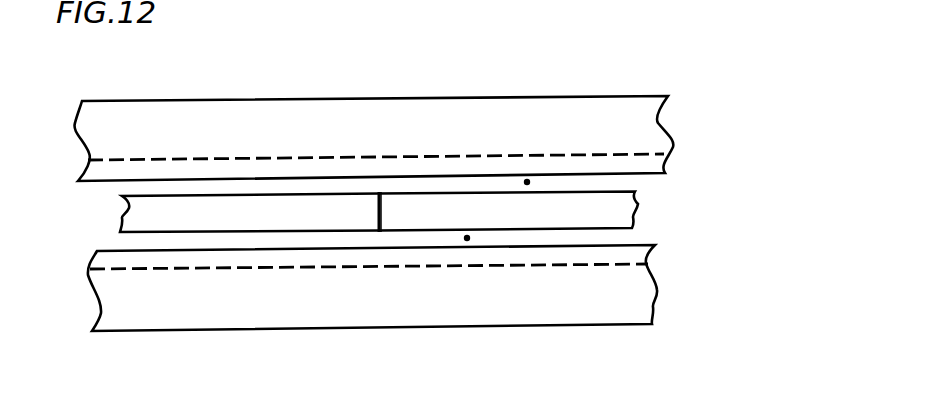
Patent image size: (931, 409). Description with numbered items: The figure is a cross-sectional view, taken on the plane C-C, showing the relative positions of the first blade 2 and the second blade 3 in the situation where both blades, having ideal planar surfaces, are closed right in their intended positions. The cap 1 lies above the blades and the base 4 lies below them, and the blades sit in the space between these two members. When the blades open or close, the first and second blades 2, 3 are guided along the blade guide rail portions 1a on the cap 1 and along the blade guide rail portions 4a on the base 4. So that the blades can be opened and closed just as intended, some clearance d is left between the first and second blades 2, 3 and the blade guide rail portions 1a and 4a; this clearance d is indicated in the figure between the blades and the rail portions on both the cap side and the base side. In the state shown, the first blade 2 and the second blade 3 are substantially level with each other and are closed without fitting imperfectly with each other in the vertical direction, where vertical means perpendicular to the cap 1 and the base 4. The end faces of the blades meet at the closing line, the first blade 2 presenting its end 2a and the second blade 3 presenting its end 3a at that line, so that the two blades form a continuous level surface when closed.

The cap 1 is at (650, 124).
The blade guide rail portions 1a is at (665, 166).
The first blade 2 is at (620, 215).
The end face of second intermediate member 2a is at (382, 205).
The second blade 3 is at (137, 207).
The end face of first intermediate member 3a is at (390, 195).
The base 4 is at (645, 300).
The blade guide rail portions 4a is at (645, 260).
The clearance d is at (527, 179).